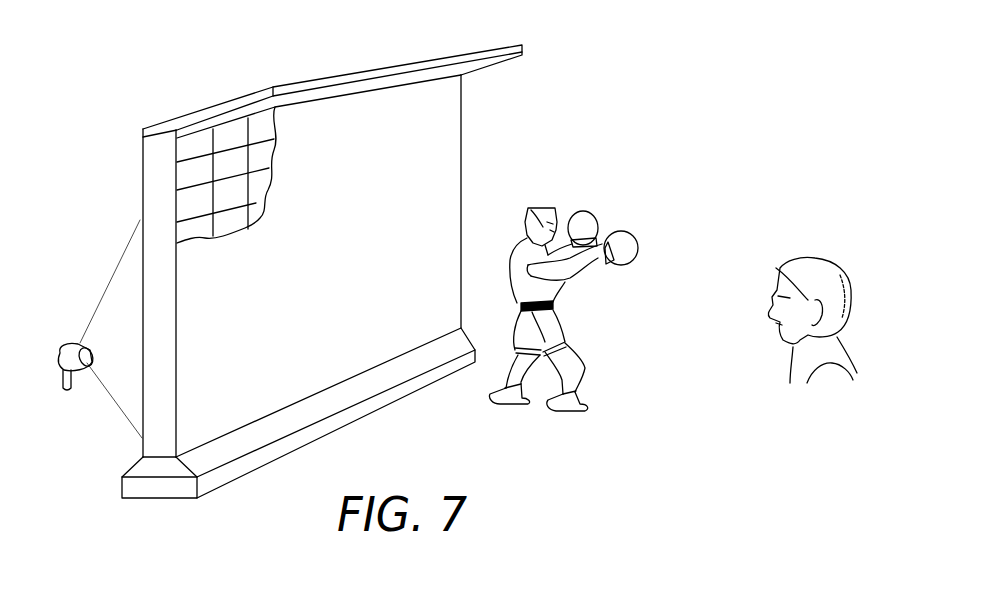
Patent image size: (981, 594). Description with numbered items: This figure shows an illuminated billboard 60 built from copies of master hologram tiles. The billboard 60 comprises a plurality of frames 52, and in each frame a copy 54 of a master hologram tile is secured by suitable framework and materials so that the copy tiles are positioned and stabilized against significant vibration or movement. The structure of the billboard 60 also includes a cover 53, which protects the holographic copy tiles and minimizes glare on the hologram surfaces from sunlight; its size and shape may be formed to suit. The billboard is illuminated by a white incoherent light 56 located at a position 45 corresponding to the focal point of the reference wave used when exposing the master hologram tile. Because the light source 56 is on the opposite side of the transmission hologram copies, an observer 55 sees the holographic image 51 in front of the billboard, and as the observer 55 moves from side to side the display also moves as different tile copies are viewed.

The cover 53 is at (498, 49).
The copy 54 is at (190, 148).
The frames 52 is at (190, 188).
The billboard 60 is at (143, 202).
The position 45 is at (92, 347).
The white incoherent light 56 is at (85, 375).
The holographic image 51 is at (573, 197).
The observer 55 is at (822, 258).